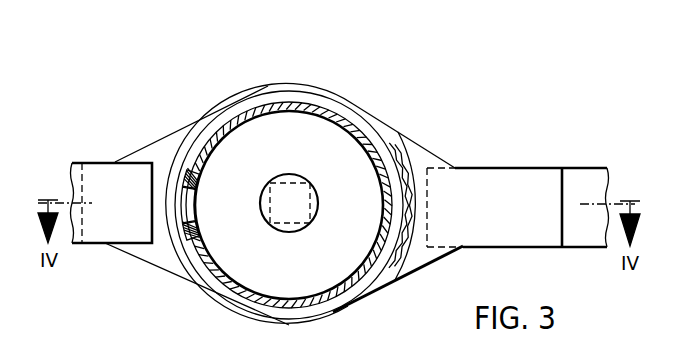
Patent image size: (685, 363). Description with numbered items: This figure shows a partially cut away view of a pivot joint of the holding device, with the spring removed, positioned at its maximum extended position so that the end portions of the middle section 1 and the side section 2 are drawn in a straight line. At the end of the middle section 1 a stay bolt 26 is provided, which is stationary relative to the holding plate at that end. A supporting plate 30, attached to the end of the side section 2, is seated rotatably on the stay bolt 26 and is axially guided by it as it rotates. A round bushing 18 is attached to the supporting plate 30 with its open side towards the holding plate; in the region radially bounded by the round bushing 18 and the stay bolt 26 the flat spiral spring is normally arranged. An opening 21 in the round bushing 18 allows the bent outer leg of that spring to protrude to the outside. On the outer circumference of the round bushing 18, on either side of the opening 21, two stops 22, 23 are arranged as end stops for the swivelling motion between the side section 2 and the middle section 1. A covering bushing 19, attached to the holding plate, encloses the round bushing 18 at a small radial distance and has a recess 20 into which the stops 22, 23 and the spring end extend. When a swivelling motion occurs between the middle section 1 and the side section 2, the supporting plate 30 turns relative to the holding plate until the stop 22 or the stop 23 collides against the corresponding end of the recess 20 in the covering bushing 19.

The middle section 1 is at (108, 178).
The side section 2 is at (586, 178).
The round bushing 18 is at (243, 292).
The covering bushing 19 is at (350, 305).
The recess 20 is at (322, 94).
The opening 21 is at (194, 203).
The stop 22 is at (182, 232).
The stop 23 is at (184, 176).
The stay bolt 26 is at (318, 196).
The supporting plate 30 is at (478, 180).